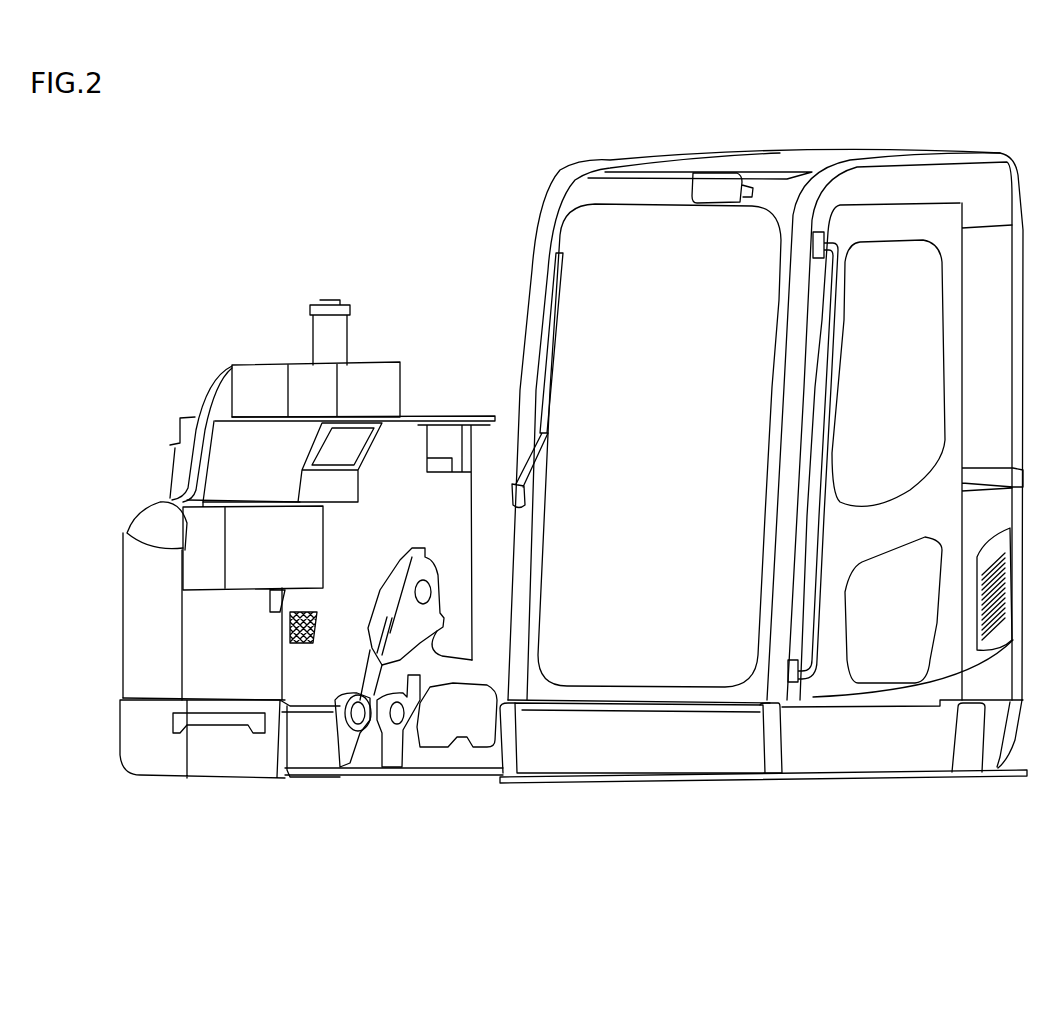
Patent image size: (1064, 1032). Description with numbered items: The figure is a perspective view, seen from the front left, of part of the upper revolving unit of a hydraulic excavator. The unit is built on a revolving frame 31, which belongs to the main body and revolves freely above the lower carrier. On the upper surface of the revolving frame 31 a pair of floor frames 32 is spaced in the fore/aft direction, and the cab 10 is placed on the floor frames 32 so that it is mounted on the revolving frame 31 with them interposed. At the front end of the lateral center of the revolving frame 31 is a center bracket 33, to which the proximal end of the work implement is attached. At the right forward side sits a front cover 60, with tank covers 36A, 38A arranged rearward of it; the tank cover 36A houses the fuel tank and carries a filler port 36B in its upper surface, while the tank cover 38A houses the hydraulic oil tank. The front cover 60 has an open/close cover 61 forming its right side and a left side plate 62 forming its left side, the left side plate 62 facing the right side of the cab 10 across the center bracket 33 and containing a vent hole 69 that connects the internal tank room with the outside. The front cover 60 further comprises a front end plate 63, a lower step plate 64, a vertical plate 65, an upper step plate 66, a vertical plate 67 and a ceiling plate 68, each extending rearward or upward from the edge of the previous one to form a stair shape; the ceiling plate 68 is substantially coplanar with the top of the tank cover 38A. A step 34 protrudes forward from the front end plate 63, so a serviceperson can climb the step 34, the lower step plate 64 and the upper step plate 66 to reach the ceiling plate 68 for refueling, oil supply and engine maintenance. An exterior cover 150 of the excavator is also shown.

The cab 10 is at (1011, 130).
The revolving frame 31 is at (600, 777).
The floor frames 32 is at (732, 747).
The center bracket 33 is at (475, 748).
The step 34 is at (218, 722).
The tank cover 36A is at (367, 387).
The filler port 36B is at (327, 340).
The tank cover 38A is at (460, 493).
The front cover 60 is at (171, 382).
The open/close cover 61 is at (150, 642).
The left side plate 62 is at (328, 680).
The front end plate 63 is at (217, 680).
The lower step plate 64 is at (240, 587).
The vertical plate 65 is at (247, 558).
The upper step plate 66 is at (313, 503).
The vertical plate 67 is at (247, 453).
The ceiling plate 68 is at (385, 418).
The vent hole 69 is at (304, 645).
The exterior cover 150 is at (150, 733).